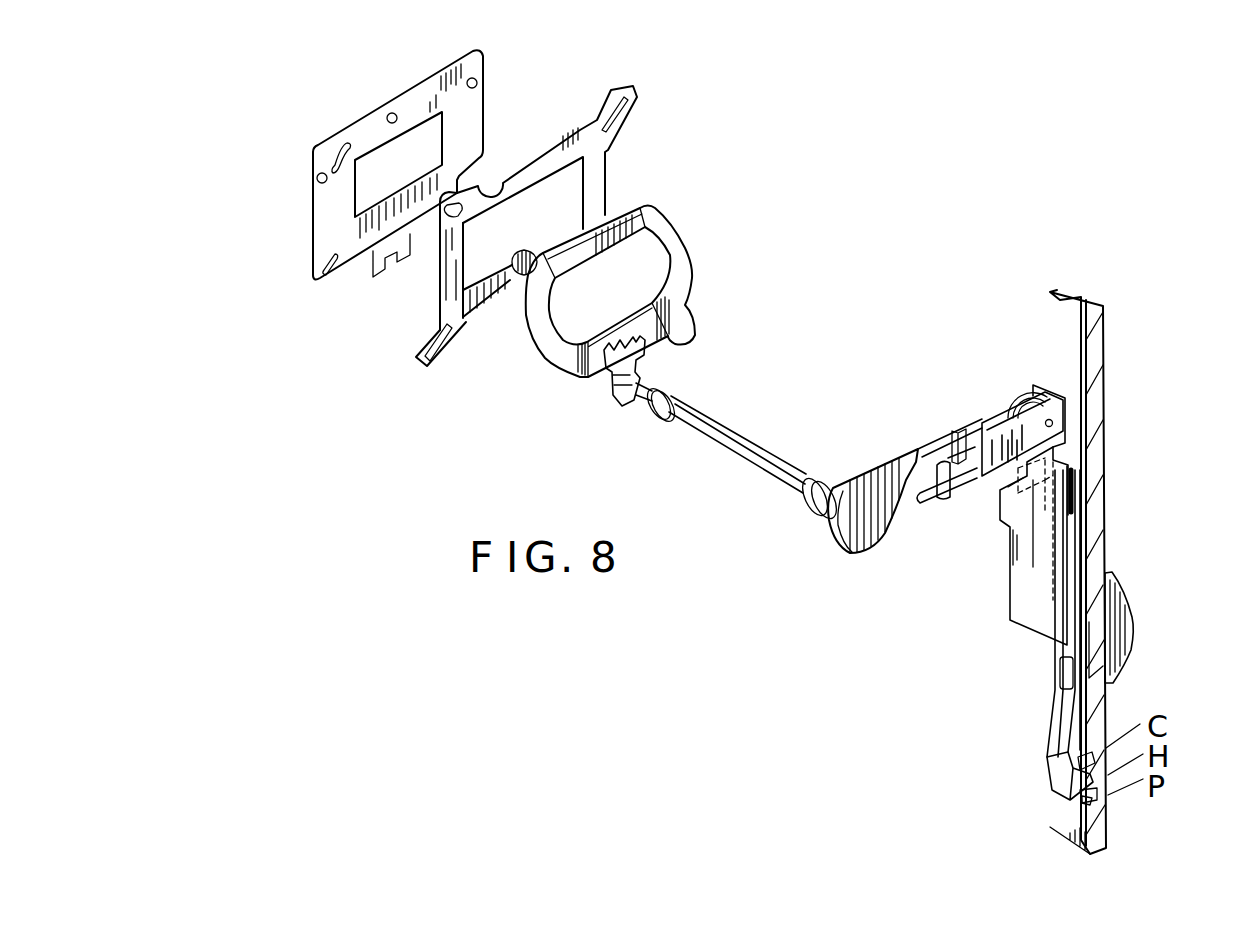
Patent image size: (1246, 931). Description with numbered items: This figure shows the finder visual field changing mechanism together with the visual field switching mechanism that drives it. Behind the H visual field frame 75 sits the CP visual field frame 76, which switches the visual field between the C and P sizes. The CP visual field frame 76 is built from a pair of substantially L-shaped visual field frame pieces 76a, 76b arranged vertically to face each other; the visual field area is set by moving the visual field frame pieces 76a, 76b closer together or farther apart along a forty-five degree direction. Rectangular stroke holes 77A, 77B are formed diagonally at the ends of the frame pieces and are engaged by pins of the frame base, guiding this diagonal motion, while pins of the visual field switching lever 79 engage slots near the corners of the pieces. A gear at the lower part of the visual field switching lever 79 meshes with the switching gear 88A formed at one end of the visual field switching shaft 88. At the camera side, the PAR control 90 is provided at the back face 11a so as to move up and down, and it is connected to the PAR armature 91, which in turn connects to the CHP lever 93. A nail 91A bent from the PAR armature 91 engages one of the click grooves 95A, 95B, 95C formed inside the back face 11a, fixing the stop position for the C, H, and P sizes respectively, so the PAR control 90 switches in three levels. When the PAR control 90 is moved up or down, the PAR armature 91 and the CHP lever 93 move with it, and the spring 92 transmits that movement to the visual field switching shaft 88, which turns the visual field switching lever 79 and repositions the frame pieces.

The H visual field frame 75 is at (322, 221).
The CP visual field frame 76 is at (491, 238).
The visual field frame piece 76a is at (543, 160).
The visual field frame piece 76b is at (487, 304).
The stroke hole 77A is at (449, 347).
The stroke hole 77B is at (614, 102).
The visual field switching lever 79 is at (680, 200).
The visual field switching shaft 88 is at (747, 451).
The switching gear 88A is at (612, 392).
The spring 92 is at (943, 449).
The CHP lever 93 is at (1018, 558).
The back face of the camera 11a is at (1100, 352).
The PAR control 90 is at (1120, 580).
The PAR armature 91 is at (1058, 715).
The nail 91A is at (1063, 782).
The click groove 95A is at (1100, 735).
The click groove 95B is at (1100, 795).
The click groove 95C is at (1086, 800).